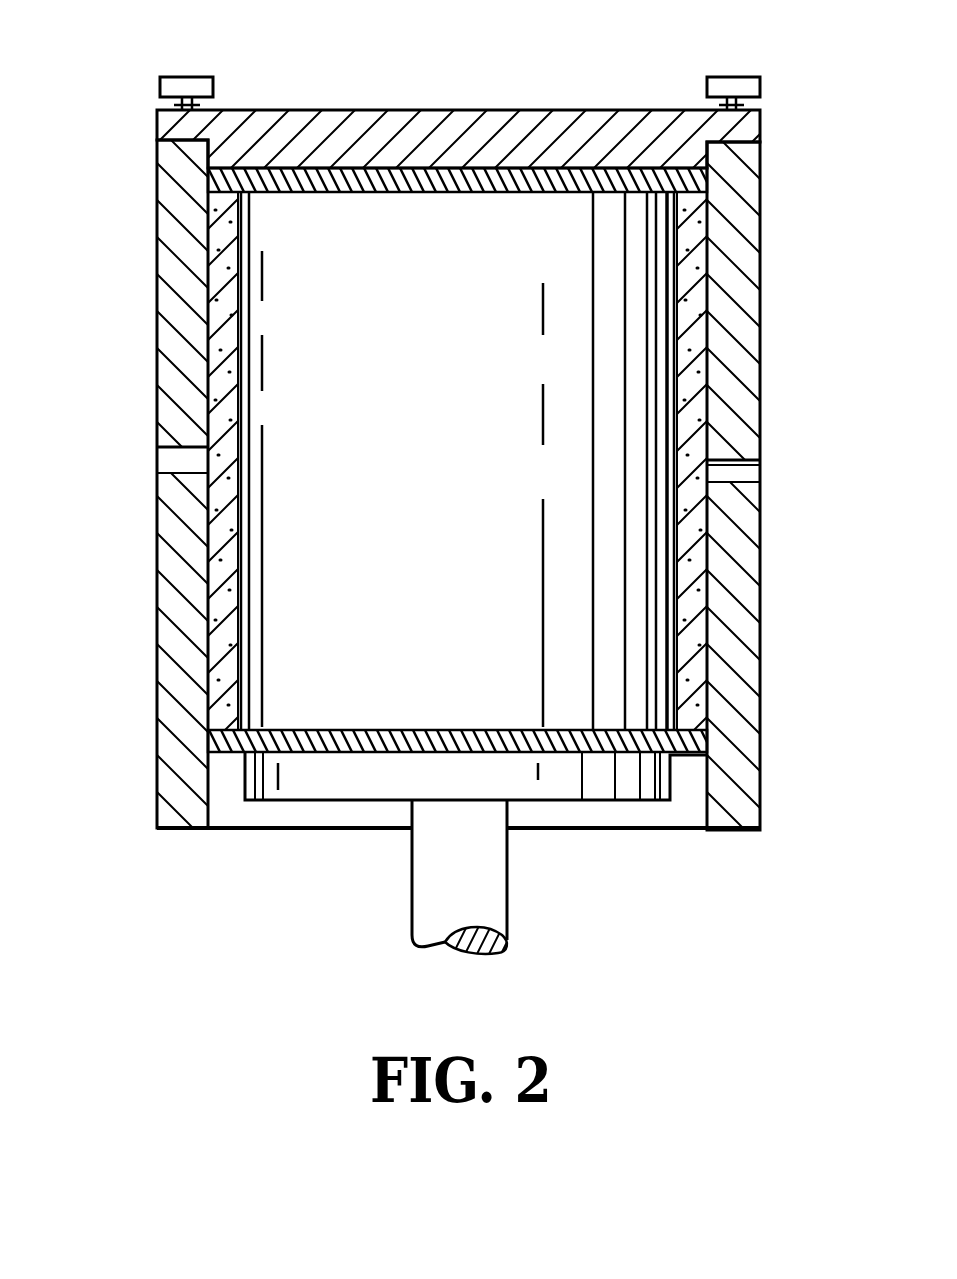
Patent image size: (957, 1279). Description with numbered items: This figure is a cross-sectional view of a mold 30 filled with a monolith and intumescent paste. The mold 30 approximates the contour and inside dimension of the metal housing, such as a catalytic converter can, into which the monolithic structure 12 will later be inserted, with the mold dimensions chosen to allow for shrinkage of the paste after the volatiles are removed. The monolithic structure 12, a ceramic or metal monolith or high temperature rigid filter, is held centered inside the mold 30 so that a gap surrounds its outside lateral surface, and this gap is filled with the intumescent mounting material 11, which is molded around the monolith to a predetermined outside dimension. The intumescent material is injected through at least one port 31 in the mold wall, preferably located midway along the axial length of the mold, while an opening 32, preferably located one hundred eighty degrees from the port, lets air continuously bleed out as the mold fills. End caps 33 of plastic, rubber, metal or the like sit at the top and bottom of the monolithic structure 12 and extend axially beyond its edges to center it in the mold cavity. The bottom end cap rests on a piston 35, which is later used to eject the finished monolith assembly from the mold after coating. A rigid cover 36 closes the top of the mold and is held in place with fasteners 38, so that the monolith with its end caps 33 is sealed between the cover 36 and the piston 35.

The intumescent mounting material 11 is at (693, 603).
The monolithic structure 12 is at (467, 531).
The mold 30 is at (158, 299).
The port 31 is at (173, 470).
The opening 32 is at (722, 470).
The end caps 33 is at (618, 170).
The piston 35 is at (483, 902).
The rigid cover 36 is at (383, 110).
The fasteners 38 is at (177, 77).